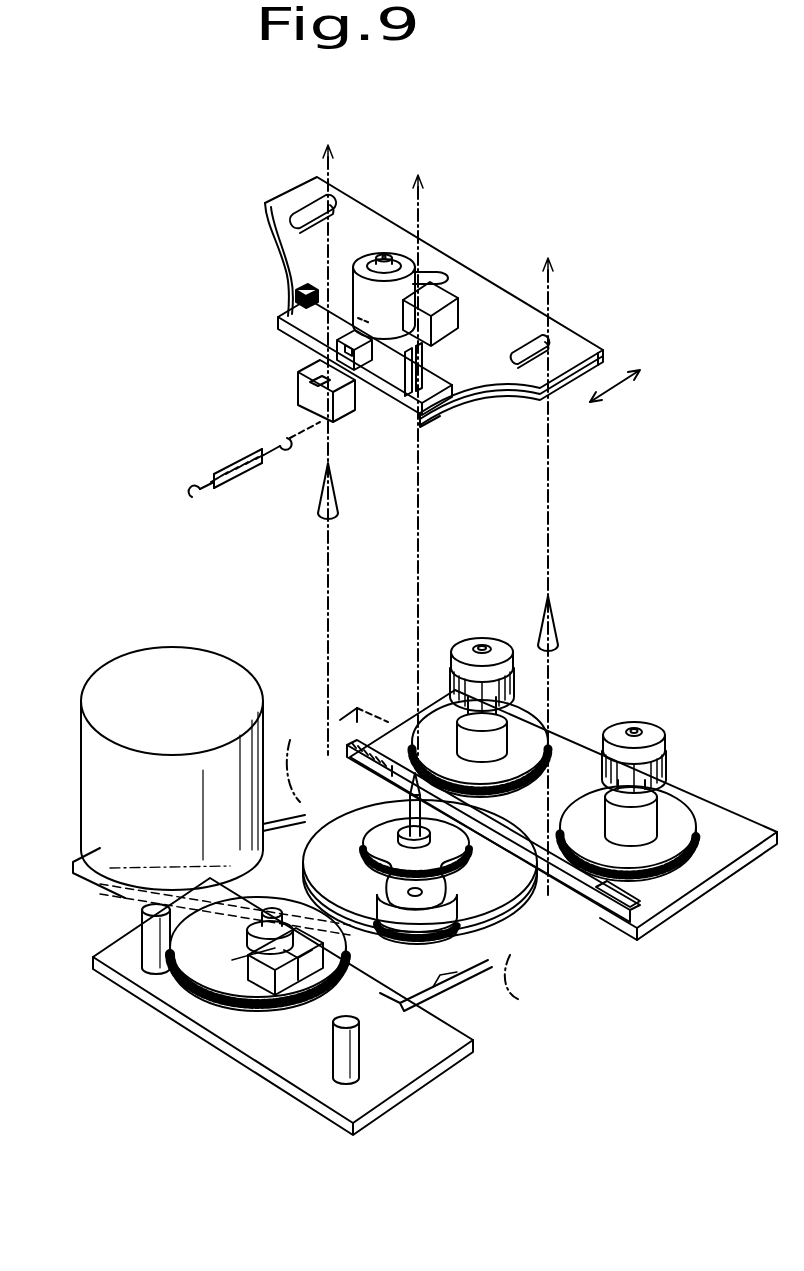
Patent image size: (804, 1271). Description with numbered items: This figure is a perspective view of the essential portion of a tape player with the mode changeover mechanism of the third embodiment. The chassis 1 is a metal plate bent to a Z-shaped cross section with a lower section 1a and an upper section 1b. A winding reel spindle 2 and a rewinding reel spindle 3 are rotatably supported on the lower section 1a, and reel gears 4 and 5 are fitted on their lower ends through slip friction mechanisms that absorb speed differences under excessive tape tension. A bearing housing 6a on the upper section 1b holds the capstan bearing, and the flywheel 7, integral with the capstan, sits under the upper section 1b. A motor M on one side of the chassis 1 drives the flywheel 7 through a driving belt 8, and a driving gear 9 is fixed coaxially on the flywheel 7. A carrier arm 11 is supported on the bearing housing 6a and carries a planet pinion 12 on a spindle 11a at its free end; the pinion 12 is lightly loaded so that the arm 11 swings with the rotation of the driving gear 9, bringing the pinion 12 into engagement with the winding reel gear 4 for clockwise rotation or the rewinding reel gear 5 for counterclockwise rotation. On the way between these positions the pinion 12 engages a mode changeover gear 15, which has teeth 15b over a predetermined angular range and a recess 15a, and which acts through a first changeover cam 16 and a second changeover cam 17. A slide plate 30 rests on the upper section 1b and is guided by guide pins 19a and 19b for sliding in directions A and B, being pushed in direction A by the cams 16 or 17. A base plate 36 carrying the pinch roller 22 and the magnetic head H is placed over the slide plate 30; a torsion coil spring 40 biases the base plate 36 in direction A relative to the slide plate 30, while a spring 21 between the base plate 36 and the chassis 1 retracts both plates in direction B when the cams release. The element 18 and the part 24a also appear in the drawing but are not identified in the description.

The chassis 1 is at (626, 943).
The lower section 1a is at (667, 888).
The upper section 1b is at (469, 983).
The winding reel spindle 2 is at (489, 642).
The rewinding reel spindle 3 is at (652, 742).
The winding reel gear 4 is at (548, 730).
The rewinding reel gear 5 is at (680, 822).
The bearing housing 6a is at (505, 918).
The flywheel 7 is at (527, 930).
The driving belt 8 is at (300, 766).
The driving gear 9 is at (382, 826).
The carrier arm 11 is at (430, 915).
The spindle 11a is at (392, 892).
The planet pinion 12 is at (462, 920).
The mode changeover gear 15 is at (217, 992).
The recess 15a is at (320, 1003).
The teeth 15b is at (244, 995).
The first changeover cam 16 is at (232, 960).
The second changeover cam 17 is at (300, 960).
The guide pin 18 is at (353, 1020).
The guide pin 19a is at (320, 500).
The guide pin 19b is at (562, 617).
The spring 21 is at (236, 466).
The pinch roller 22 is at (398, 260).
The solenoid plunger 24a is at (381, 256).
The slide plate 30 is at (600, 373).
The base plate 36 is at (495, 300).
The torsion coil spring 40 is at (278, 343).
The magnetic head H is at (443, 298).
The motor M is at (147, 668).
The direction A is at (631, 375).
The direction B is at (579, 416).